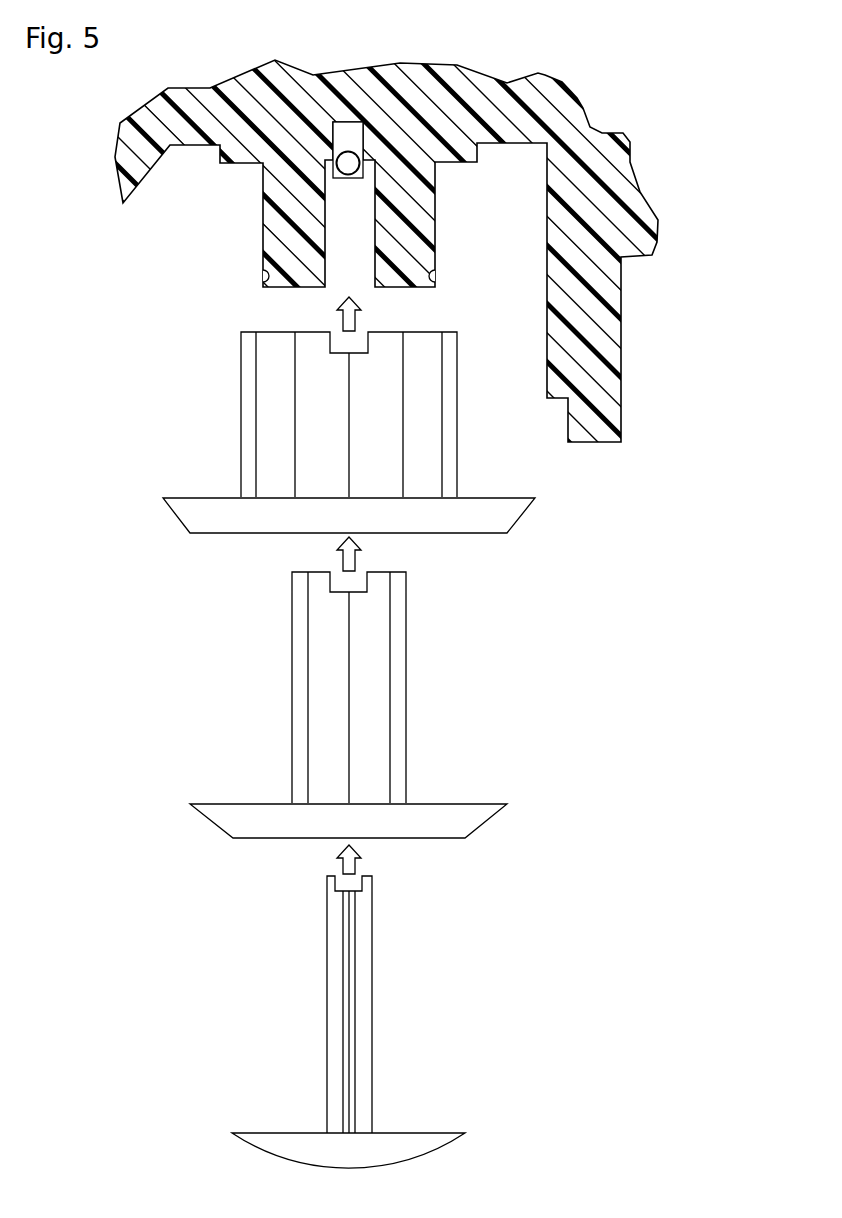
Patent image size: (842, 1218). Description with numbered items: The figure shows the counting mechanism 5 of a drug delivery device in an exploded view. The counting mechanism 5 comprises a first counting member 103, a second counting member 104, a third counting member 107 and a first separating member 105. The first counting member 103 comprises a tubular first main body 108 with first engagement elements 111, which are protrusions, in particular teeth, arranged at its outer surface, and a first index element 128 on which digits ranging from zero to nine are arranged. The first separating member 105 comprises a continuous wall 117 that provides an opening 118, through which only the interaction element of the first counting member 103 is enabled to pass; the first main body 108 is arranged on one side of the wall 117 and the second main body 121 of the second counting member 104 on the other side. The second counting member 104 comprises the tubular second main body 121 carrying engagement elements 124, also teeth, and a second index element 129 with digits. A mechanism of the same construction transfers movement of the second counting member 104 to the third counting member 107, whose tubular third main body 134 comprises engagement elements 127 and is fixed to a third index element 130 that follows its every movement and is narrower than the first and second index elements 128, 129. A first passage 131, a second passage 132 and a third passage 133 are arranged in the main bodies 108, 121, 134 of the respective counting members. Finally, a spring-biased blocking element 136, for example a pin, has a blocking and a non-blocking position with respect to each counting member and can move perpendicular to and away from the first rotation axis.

The counting mechanism 5 is at (690, 1027).
The first counting member 103 is at (437, 450).
The second counting member 104 is at (395, 668).
The first separating member 105 is at (273, 260).
The third counting member 107 is at (365, 1023).
The first main body 108 is at (272, 467).
The first engagement elements 111 is at (295, 398).
The wall 117 is at (287, 225).
The opening 118 is at (352, 274).
The second main body 121 is at (378, 726).
The engagement elements 124 is at (388, 628).
The engagement elements 127 is at (355, 922).
The first index element 128 is at (513, 510).
The second index element 129 is at (473, 821).
The third index element 130 is at (398, 1147).
The first passage 131 is at (353, 343).
The second passage 132 is at (347, 580).
The third passage 133 is at (348, 885).
The third main body 134 is at (365, 975).
The blocking element 136 is at (349, 160).